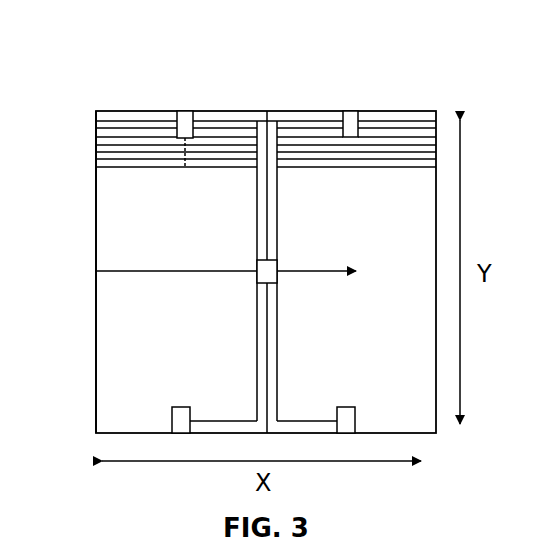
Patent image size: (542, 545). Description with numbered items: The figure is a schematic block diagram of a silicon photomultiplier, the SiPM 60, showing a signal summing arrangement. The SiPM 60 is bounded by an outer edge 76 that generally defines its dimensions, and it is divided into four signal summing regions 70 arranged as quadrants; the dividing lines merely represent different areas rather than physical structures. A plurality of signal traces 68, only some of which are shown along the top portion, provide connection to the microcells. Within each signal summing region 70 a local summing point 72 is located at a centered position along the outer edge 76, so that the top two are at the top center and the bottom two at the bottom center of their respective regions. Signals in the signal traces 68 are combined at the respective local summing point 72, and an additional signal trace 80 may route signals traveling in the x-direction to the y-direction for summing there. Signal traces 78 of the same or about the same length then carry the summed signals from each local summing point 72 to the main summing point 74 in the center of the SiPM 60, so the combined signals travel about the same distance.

The SiPM 60 is at (122, 42).
The signal traces 68 is at (387, 110).
The signal summing regions 70 is at (148, 251).
The local summing points 72 is at (186, 111).
The main summing point 74 is at (278, 263).
The outer edge 76 is at (148, 111).
The signal traces 78 is at (278, 208).
The signal trace 80 is at (181, 151).